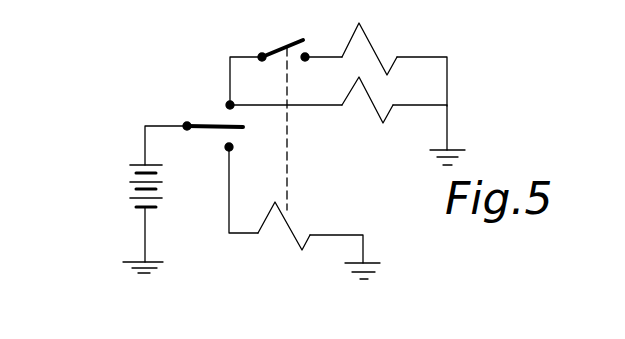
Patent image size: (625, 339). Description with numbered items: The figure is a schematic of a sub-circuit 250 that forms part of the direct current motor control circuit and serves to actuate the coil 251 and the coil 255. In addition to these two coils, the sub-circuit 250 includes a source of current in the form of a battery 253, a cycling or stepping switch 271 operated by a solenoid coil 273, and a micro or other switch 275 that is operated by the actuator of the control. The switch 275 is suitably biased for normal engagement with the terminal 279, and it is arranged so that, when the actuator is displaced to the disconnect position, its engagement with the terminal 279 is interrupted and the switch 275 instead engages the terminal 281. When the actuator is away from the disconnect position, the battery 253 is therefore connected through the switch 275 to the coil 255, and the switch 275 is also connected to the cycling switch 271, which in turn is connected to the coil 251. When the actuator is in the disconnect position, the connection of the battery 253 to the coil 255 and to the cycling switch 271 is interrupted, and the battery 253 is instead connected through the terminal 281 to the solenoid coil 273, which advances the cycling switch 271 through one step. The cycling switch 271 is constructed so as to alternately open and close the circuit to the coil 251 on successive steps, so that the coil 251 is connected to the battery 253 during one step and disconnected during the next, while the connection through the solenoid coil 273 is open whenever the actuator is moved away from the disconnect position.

The sub-circuit 250 is at (423, 202).
The cycling switch 271 is at (291, 29).
The coil 251 is at (368, 38).
The coil 255 is at (370, 108).
The terminal 279 is at (230, 102).
The switch 275 is at (203, 112).
The terminal 281 is at (226, 148).
The battery 253 is at (130, 181).
The solenoid coil 273 is at (270, 219).